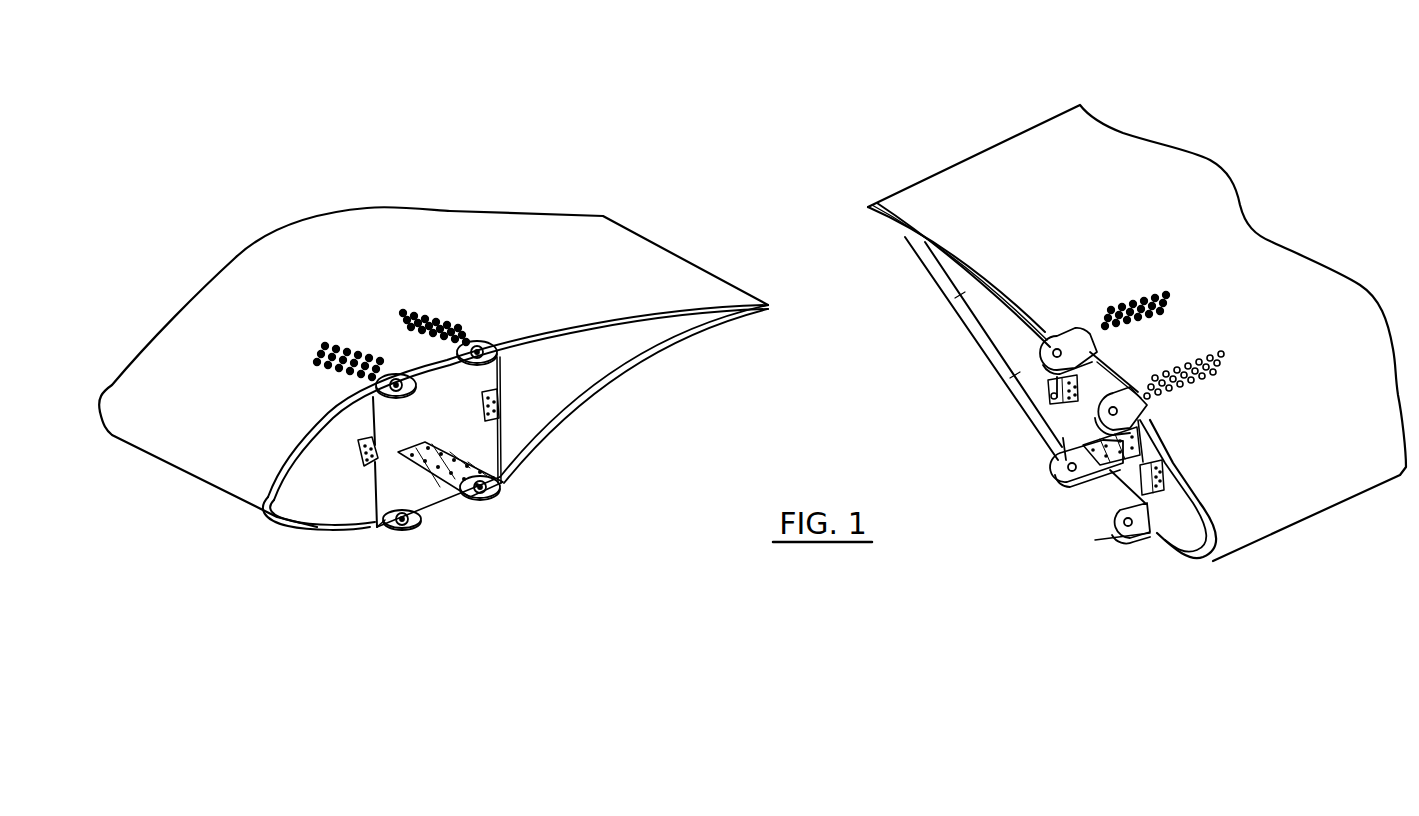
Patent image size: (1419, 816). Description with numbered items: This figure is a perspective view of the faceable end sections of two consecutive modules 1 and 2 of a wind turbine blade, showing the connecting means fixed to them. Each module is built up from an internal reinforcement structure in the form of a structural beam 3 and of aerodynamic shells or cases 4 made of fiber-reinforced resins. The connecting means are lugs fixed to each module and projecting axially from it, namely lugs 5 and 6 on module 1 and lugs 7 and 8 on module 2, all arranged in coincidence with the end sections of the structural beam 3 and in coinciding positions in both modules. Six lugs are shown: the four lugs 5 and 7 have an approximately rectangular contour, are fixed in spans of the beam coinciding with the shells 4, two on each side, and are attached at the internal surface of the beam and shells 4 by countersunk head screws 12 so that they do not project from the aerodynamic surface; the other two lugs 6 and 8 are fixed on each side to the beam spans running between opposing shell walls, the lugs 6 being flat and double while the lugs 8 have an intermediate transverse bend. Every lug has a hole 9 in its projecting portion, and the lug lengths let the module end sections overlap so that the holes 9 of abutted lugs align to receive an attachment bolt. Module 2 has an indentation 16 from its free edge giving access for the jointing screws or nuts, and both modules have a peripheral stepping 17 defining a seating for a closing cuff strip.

The module 1 is at (557, 188).
The module 2 is at (958, 145).
The structural beam 3 is at (373, 483).
The aerodynamic shells or cases 4 is at (583, 277).
The lugs 5 is at (410, 377).
The lugs 6 is at (507, 412).
The lugs 7 is at (1040, 350).
The lugs 8 is at (1048, 400).
The hole 9 is at (1056, 348).
The countersunk head screws 12 is at (397, 318).
The indentation 16 is at (1120, 400).
The peripheral stepping 17 is at (913, 247).